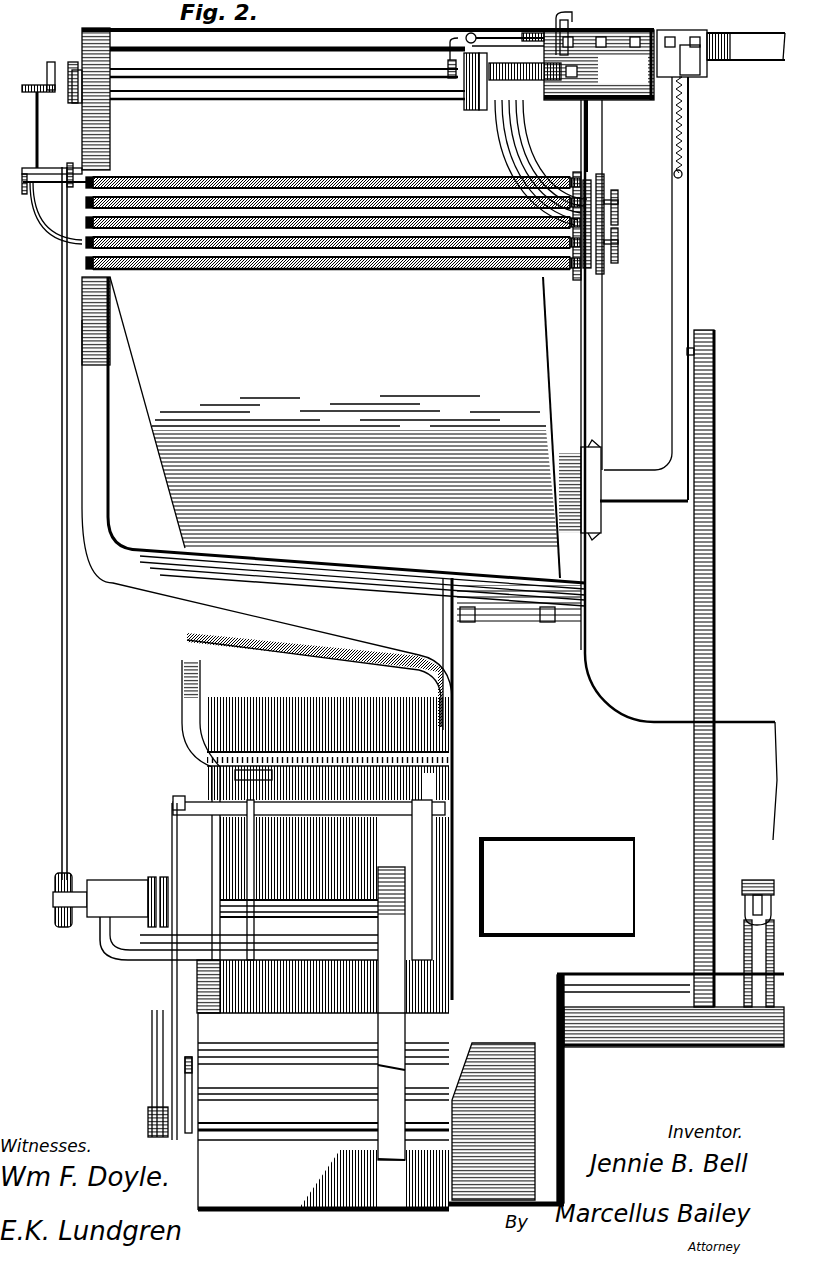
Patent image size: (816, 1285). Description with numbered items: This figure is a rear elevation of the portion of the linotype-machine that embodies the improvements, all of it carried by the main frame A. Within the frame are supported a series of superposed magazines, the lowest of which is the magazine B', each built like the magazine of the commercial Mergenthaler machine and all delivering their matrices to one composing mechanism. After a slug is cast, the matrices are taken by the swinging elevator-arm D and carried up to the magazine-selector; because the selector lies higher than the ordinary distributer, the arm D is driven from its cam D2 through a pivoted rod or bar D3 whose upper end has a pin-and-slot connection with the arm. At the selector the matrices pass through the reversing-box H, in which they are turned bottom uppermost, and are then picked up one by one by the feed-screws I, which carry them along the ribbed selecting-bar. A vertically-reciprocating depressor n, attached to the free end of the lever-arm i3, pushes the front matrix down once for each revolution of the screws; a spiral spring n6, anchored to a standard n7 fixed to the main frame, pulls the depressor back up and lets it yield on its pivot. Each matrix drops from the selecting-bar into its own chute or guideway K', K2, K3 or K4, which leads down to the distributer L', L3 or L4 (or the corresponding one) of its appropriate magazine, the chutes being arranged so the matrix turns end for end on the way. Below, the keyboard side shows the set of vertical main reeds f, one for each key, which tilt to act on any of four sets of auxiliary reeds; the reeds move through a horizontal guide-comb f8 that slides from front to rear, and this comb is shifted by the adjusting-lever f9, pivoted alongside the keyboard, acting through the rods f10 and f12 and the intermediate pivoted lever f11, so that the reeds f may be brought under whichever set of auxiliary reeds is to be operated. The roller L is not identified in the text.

The main frame A is at (90, 378).
The magazine B' is at (335, 427).
The roller L is at (333, 279).
The distributer L' is at (333, 284).
The distributer L3 is at (172, 213).
The distributer L4 is at (287, 104).
The feed-screws I is at (470, 107).
The lever-arm i3 is at (492, 33).
The depressor n is at (575, 33).
The spiral spring n6 is at (560, 14).
The standard n7 is at (572, 15).
The reversing-box H is at (599, 65).
The chute or guideway K' is at (564, 156).
The chute or guideway K2 is at (560, 142).
The chute or guideway K3 is at (562, 165).
The chute or guideway K4 is at (505, 152).
The swinging elevator-arm D is at (694, 215).
The cam D2 is at (752, 882).
The pivoted rod or bar D3 is at (706, 682).
The key-bars or reeds f is at (450, 813).
The guide-comb f8 is at (240, 775).
The adjusting-lever f9 is at (190, 1082).
The connecting-rod f10 is at (172, 847).
The pivoted lever f11 is at (173, 812).
The connecting-rod f12 is at (430, 805).